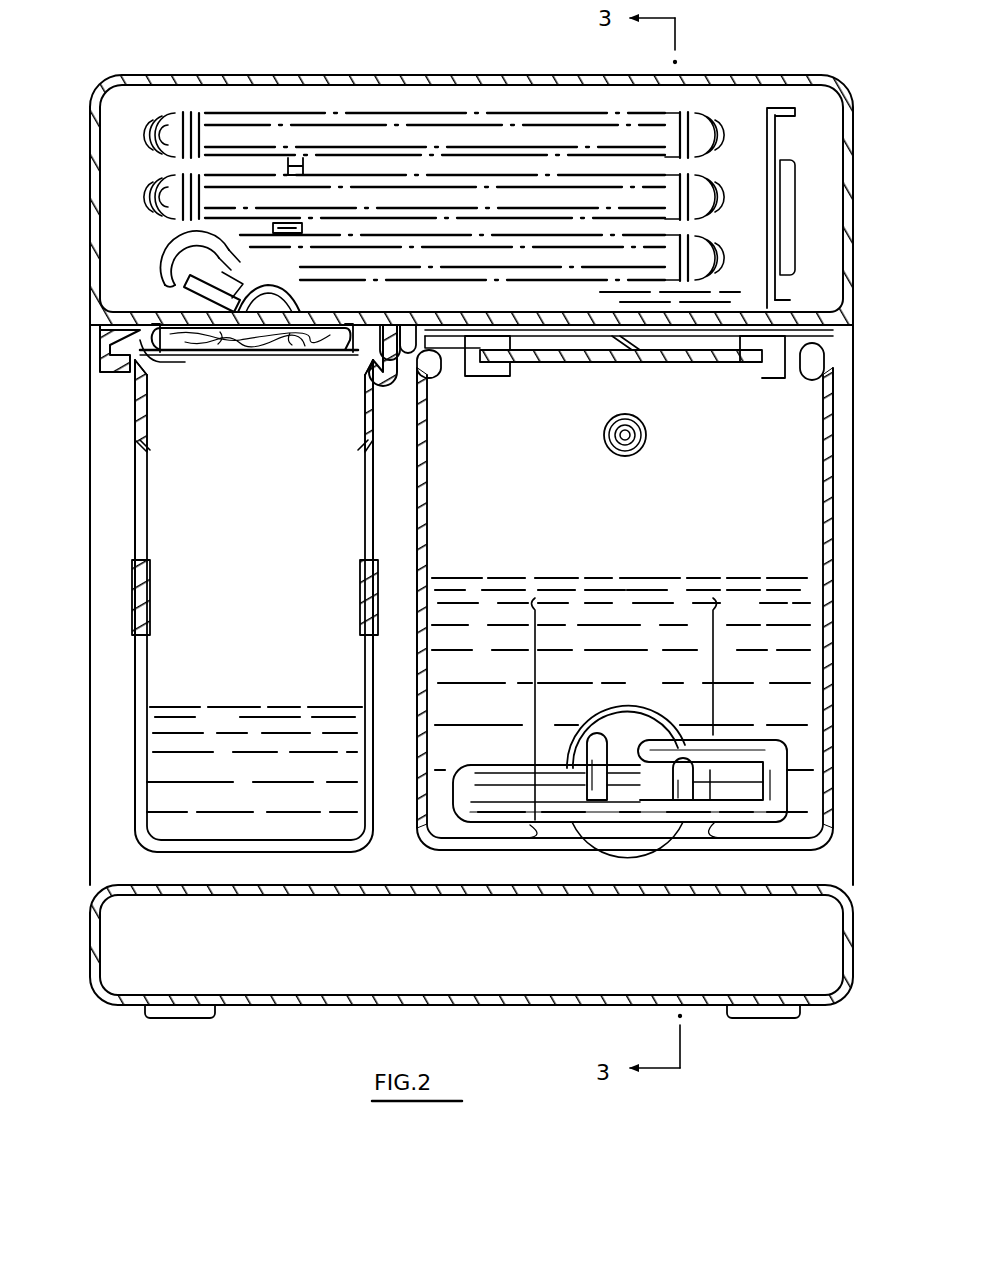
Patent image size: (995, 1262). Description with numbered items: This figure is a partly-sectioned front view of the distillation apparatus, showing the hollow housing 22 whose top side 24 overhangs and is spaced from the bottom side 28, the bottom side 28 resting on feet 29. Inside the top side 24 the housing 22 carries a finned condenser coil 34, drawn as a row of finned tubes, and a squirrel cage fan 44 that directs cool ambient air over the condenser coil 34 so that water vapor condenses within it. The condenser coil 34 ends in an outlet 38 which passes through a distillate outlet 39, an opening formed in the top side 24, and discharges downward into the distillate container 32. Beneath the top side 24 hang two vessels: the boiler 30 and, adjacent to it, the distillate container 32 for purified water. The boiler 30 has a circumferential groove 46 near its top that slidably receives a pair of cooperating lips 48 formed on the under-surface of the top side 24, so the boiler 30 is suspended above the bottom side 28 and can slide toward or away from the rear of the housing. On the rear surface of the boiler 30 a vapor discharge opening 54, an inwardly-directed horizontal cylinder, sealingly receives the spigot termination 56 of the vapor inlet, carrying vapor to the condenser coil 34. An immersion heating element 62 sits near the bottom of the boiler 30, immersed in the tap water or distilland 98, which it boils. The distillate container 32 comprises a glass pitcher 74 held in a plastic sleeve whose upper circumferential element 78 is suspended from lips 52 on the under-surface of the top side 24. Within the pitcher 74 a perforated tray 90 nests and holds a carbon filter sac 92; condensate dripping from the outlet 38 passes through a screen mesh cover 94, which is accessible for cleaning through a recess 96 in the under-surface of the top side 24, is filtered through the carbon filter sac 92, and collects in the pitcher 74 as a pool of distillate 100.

The hollow housing 22 is at (237, 70).
The top side 24 is at (446, 74).
The bottom side 28 is at (305, 1008).
The feet 29 is at (172, 1020).
The boiler 30 is at (832, 440).
The distillate container 32 is at (120, 506).
The finned condenser coil 34 is at (165, 117).
The outlet 38 is at (190, 290).
The distillate outlet 39 is at (165, 250).
The squirrel cage fan 44 is at (782, 178).
The circumferential groove 46 is at (797, 365).
The lips 48 is at (440, 380).
The lips 52 is at (115, 378).
The vapor discharge opening 54 is at (615, 455).
The spigot termination 56 is at (632, 452).
The immersion heating element 62 is at (495, 768).
The glass pitcher 74 is at (150, 628).
The upper circumferential element 78 is at (145, 438).
The perforated tray 90 is at (160, 366).
The carbon filter sac 92 is at (283, 352).
The screen mesh cover 94 is at (248, 352).
The recess 96 is at (302, 300).
The distilland 98 is at (498, 580).
The distillate 100 is at (289, 710).